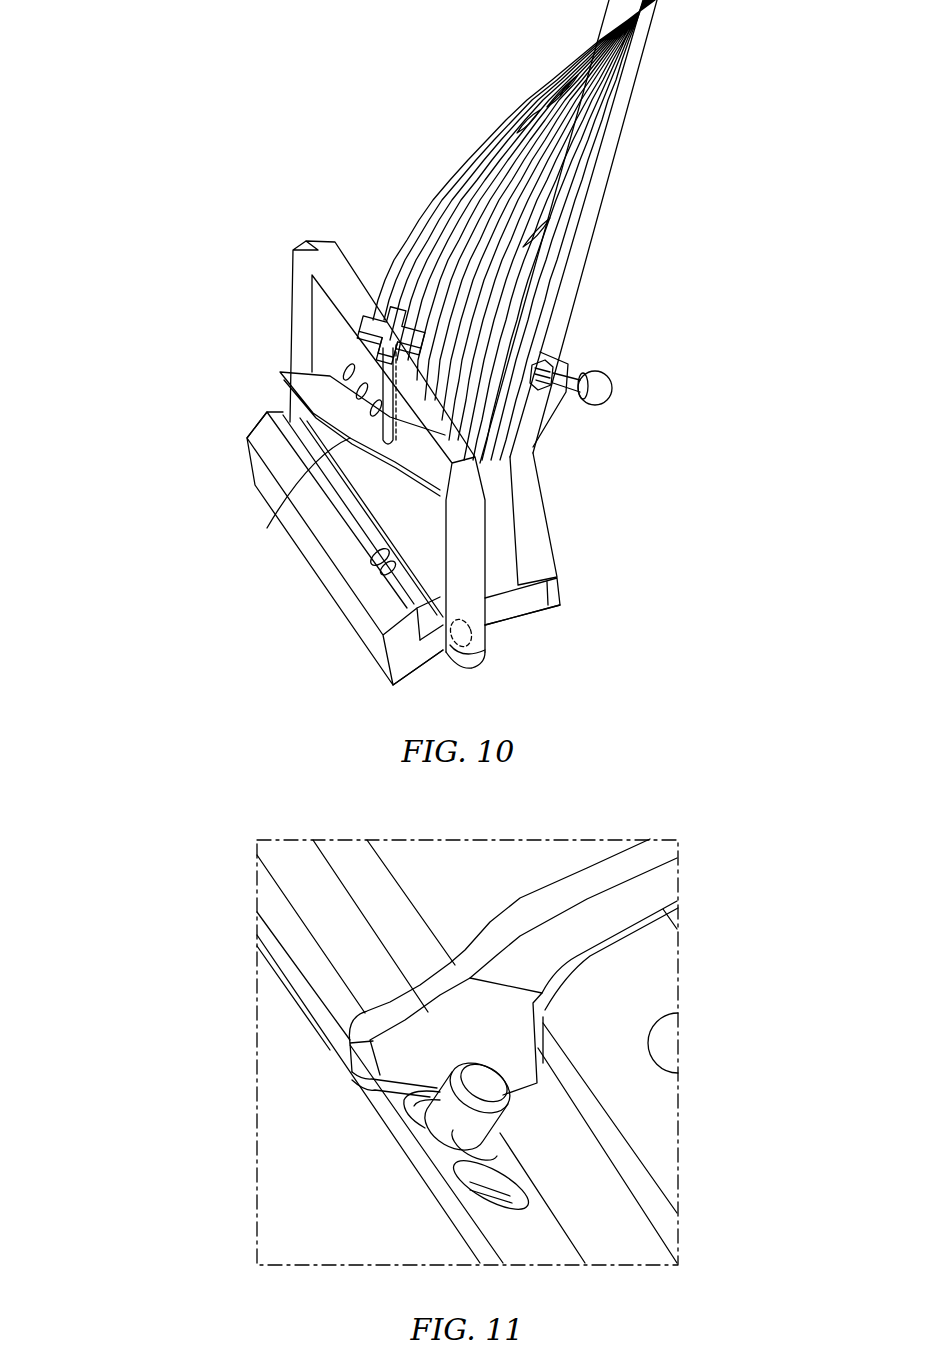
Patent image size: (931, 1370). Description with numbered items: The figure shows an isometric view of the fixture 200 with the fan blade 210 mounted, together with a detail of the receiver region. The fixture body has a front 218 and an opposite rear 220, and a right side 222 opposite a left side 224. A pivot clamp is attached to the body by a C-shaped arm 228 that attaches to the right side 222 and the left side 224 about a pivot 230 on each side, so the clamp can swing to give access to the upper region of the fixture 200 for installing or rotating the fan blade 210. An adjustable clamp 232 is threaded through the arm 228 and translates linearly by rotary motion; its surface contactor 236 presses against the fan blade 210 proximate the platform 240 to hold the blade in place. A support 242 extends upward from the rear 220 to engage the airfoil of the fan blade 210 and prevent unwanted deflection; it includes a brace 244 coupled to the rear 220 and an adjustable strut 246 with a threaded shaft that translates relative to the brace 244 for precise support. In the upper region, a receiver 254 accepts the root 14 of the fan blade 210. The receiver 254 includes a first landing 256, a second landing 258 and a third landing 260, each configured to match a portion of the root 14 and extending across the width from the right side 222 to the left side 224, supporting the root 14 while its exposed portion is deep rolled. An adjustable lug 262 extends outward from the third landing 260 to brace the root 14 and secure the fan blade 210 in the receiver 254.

In FIG. 10, the fixture 200 is at (153, 404).
In FIG. 11, the fixture 200 is at (210, 1030).
In FIG. 10, the fan blade 210 is at (655, 68).
In FIG. 10, the front 218 is at (299, 586).
In FIG. 10, the rear 220 is at (620, 482).
In FIG. 10, the right side 222 is at (548, 632).
In FIG. 10, the left side 224 is at (247, 398).
In FIG. 10, the arm 228 is at (292, 292).
In FIG. 10, the pivot 230 is at (475, 655).
In FIG. 10, the adjustable clamp 232 is at (390, 318).
In FIG. 10, the surface contactor 236 is at (268, 526).
In FIG. 10, the platform 240 is at (285, 370).
In FIG. 10, the support 242 is at (572, 326).
In FIG. 10, the brace 244 is at (550, 490).
In FIG. 10, the adjustable strut 246 is at (612, 385).
In FIG. 11, the receiver 254 is at (655, 1157).
In FIG. 11, the first landing 256 is at (665, 1222).
In FIG. 10, the second landing 258 is at (437, 620).
In FIG. 11, the second landing 258 is at (622, 1237).
In FIG. 10, the third landing 260 is at (385, 638).
In FIG. 11, the third landing 260 is at (527, 1243).
In FIG. 10, the lug 262 is at (362, 572).
In FIG. 11, the lug 262 is at (425, 1132).
In FIG. 11, the root 14 is at (472, 1034).